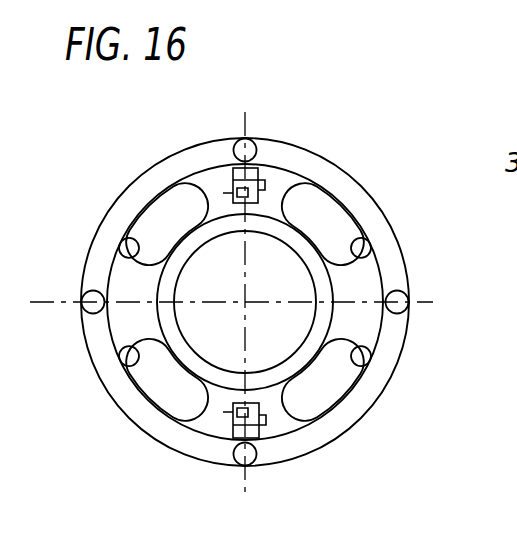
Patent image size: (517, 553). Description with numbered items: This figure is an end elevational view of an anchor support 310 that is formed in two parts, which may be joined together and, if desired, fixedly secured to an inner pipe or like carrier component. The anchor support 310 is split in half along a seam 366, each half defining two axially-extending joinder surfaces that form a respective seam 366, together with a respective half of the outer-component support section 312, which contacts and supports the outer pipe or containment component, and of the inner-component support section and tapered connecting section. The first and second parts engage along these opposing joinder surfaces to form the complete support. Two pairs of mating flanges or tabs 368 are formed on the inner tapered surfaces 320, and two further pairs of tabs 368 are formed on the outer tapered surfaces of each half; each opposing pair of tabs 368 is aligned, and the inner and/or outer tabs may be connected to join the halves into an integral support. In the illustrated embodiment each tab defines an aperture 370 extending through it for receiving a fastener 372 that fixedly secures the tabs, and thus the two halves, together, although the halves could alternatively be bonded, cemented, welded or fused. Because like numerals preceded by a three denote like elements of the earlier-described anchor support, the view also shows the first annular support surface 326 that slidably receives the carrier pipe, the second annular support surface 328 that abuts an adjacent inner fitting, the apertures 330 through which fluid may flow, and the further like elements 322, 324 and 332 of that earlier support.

The anchor support 310 is at (322, 79).
The outer-component support section 312 is at (350, 172).
The inner tapered surface 320 is at (125, 272).
The outer peripheral surface 322 is at (320, 452).
The annular flange 324 is at (384, 361).
The first annular support surface 326 is at (209, 362).
The second annular support surface 328 is at (167, 314).
The apertures 330 is at (364, 242).
The hole 332 is at (402, 292).
The seam 366 is at (226, 147).
The mating flanges or tabs 368 is at (262, 172).
The aperture 370 is at (154, 163).
The fastener 372 is at (266, 184).